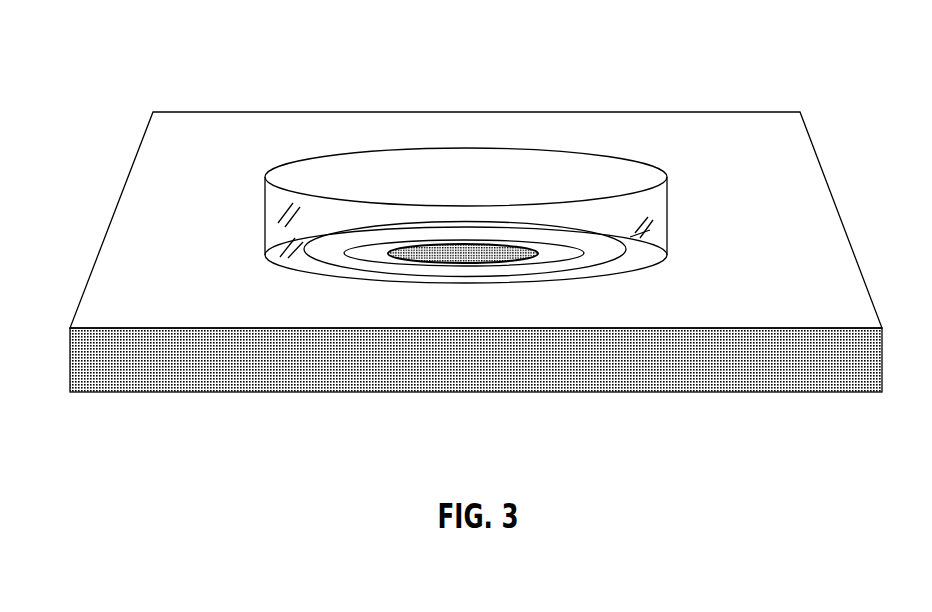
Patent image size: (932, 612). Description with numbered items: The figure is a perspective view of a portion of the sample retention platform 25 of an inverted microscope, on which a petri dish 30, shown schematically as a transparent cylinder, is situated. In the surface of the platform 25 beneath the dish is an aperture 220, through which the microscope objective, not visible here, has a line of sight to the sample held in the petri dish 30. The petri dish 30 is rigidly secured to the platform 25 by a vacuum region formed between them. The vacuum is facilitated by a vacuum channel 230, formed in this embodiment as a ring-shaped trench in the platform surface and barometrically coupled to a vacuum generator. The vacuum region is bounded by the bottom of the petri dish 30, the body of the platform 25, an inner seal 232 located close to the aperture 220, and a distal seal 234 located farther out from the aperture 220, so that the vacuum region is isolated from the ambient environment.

The platform 25 is at (715, 157).
The petri dish 30 is at (667, 203).
The aperture 220 is at (487, 250).
The vacuum channel 230 is at (343, 255).
The inner seal 232 is at (390, 253).
The distal seal 234 is at (306, 256).